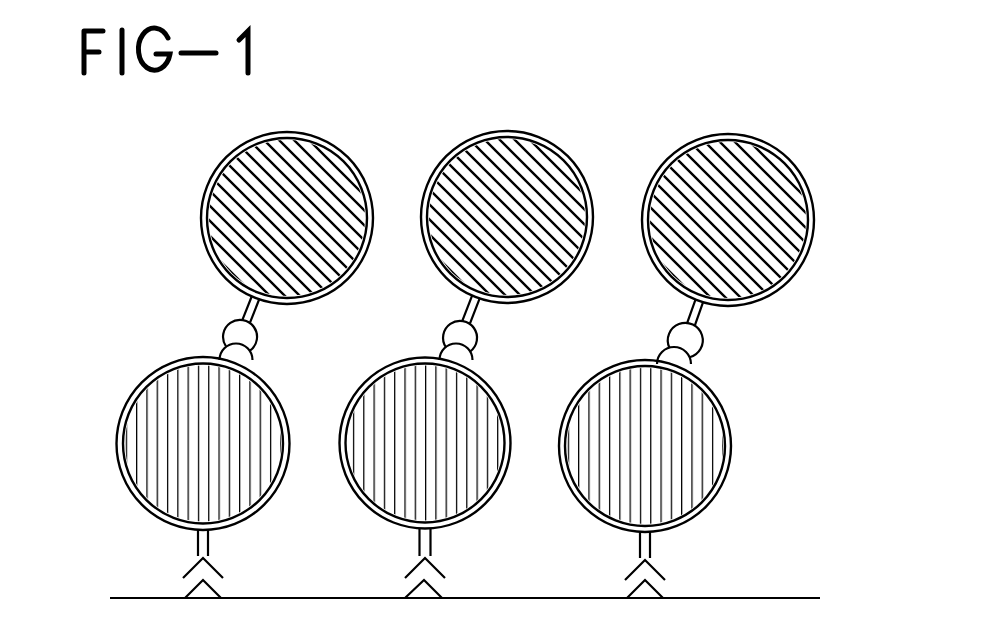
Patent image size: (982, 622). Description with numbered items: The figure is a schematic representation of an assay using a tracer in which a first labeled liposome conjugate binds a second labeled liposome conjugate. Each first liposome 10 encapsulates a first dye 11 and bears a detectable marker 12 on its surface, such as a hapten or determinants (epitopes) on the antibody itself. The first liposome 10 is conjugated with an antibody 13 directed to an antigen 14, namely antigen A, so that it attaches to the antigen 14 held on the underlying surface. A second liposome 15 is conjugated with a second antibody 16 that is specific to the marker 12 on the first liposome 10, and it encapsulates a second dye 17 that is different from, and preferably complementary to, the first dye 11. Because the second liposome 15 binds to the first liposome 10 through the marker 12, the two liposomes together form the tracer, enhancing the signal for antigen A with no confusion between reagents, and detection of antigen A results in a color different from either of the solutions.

The first liposome 10 is at (158, 370).
The first dye 11 is at (152, 483).
The detectable marker 12 is at (444, 357).
The antibody 13 is at (410, 575).
The antigen 14 is at (190, 590).
The second liposome 15 is at (236, 150).
The second antibody 16 is at (227, 331).
The second dye 17 is at (292, 152).